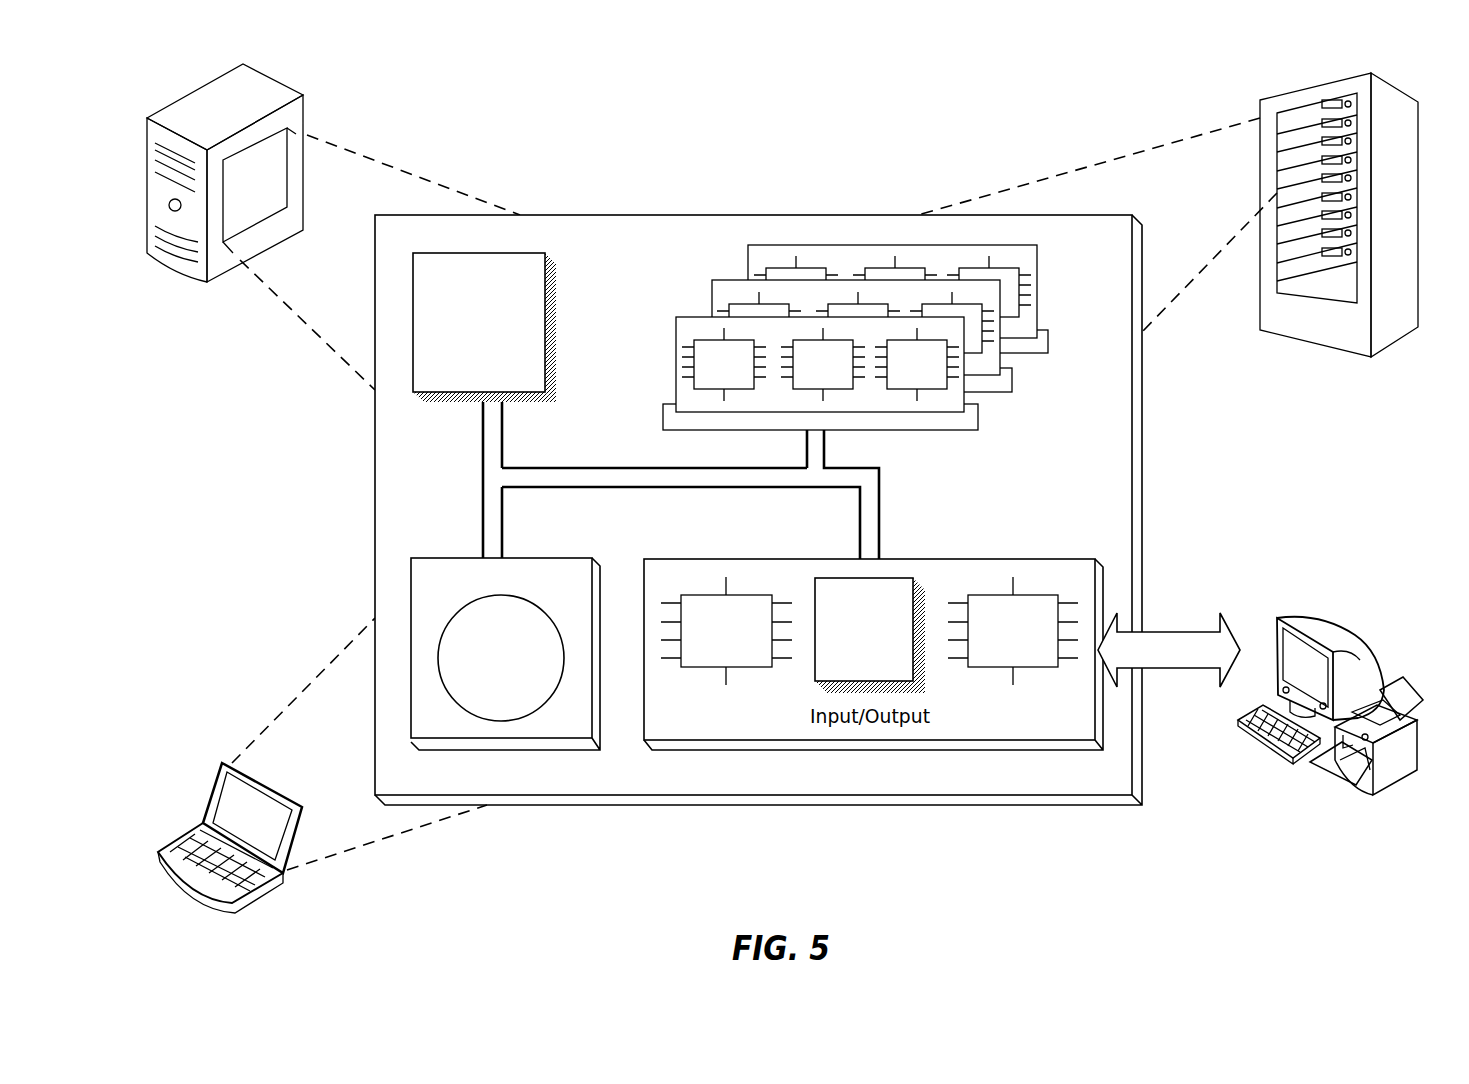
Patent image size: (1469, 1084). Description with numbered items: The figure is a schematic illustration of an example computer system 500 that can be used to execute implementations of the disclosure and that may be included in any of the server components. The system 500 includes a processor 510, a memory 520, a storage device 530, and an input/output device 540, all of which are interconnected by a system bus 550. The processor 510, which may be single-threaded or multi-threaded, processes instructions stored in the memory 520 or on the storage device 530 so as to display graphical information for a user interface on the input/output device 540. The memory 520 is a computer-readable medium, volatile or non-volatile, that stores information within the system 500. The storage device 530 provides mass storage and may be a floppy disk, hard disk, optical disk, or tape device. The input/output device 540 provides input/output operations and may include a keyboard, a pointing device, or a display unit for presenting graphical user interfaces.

The computer system 500 is at (566, 88).
The processor 510 is at (537, 384).
The memory 520 is at (1042, 386).
The storage device 530 is at (580, 729).
The input/output device 540 is at (1272, 624).
The system bus 550 is at (680, 489).